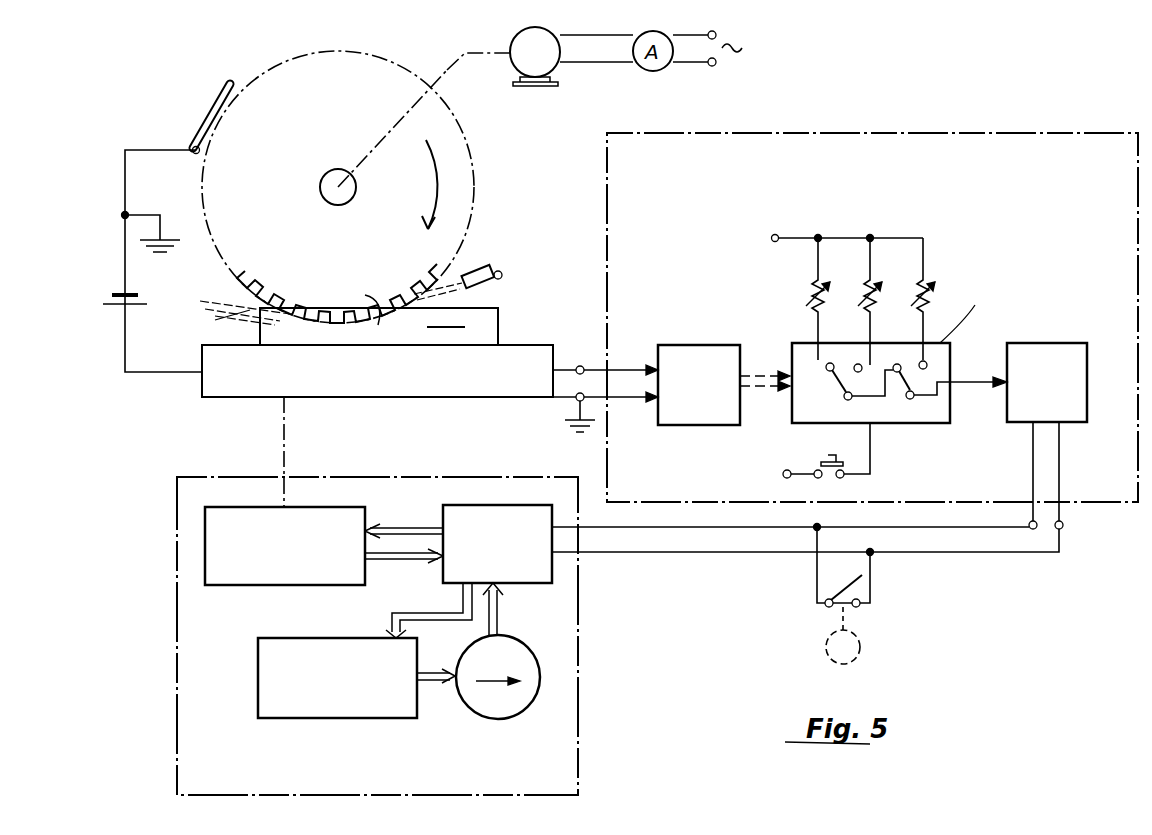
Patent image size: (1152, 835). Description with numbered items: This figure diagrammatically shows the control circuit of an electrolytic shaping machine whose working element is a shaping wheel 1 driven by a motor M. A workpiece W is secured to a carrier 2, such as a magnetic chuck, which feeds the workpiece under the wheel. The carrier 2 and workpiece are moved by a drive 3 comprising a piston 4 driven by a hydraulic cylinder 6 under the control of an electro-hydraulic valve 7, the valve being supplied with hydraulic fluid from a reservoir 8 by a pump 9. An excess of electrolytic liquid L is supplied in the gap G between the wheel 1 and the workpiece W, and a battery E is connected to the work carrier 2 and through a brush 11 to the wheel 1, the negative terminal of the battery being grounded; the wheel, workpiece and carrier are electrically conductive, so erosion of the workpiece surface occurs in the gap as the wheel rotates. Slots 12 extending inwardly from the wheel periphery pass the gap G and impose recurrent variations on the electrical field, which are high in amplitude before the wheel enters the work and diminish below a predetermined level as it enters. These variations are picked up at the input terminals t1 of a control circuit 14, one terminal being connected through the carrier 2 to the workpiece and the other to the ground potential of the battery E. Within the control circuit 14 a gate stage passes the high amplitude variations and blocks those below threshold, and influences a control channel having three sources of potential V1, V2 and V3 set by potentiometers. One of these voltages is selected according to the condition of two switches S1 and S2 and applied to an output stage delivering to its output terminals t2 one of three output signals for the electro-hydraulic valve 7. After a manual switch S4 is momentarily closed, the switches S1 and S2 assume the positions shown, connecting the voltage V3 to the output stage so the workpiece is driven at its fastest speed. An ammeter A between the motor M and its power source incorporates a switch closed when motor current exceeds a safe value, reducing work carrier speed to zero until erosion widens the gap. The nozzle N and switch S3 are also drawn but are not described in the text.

The shaping wheel 1 is at (412, 66).
The carrier 2 is at (556, 362).
The drive 3 is at (578, 640).
The piston 4 is at (290, 455).
The hydraulic cylinder 6 is at (240, 587).
The electro-hydraulic valve 7 is at (443, 515).
The reservoir 8 is at (258, 669).
The pump 9 is at (522, 712).
The brush 11 is at (208, 115).
The slots 12 is at (258, 284).
The control circuit 14 is at (910, 130).
The battery E is at (108, 300).
The gap G is at (366, 298).
The electrolytic liquid L is at (218, 322).
The nozzle N is at (480, 265).
The workpiece W is at (500, 318).
The motor M is at (535, 56).
The ammeter A is at (860, 652).
The input terminals t1 is at (574, 400).
The output terminals t2 is at (1062, 529).
The source of potential V1 is at (838, 250).
The source of potential V2 is at (890, 255).
The source of potential V3 is at (942, 262).
The switch S1 is at (840, 392).
The switch S2 is at (904, 392).
The push-button switch S3 is at (815, 460).
The manual switch S4 is at (846, 597).